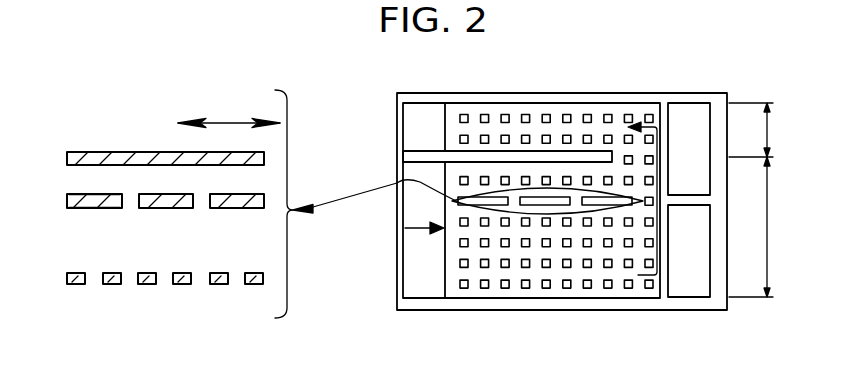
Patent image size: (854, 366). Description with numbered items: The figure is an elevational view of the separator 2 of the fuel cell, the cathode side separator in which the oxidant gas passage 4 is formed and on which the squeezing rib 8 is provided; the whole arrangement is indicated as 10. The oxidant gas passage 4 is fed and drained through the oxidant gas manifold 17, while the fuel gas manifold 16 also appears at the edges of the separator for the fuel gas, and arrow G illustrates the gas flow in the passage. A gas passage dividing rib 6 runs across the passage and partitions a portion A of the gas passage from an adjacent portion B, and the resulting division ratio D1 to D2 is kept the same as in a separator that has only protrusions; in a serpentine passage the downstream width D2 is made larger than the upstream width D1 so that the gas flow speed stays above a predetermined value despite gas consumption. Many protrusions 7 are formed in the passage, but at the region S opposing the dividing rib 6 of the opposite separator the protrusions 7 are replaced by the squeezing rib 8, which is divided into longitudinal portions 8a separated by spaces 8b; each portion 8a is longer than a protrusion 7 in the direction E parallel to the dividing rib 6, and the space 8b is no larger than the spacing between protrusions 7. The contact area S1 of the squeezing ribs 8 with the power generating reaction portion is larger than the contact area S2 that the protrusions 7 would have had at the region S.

The separator 2 is at (555, 90).
The oxidant gas passage 4 is at (572, 275).
The gas passage dividing rib 6 is at (138, 160).
The protrusion 7 is at (70, 285).
The squeezing rib 8 is at (98, 208).
The divided portion 8a is at (87, 207).
The space 8b is at (128, 197).
The electronic device 10 is at (742, 90).
The fuel gas manifold 16 is at (680, 118).
The oxidant gas manifold 17 is at (423, 137).
The portion of the gas passage A is at (557, 273).
The another portion of the gas passage B is at (517, 132).
The direction in which the squeezing rib extends E is at (230, 122).
The gas flow G is at (405, 228).
The region S is at (107, 160).
The contact area of the squeezing ribs S1 is at (110, 208).
The contact area of the protrusions S2 is at (78, 285).
The width of the upstream portion of the gas passage D1 is at (768, 220).
The width of the downstream portion of the gas passage D2 is at (768, 130).